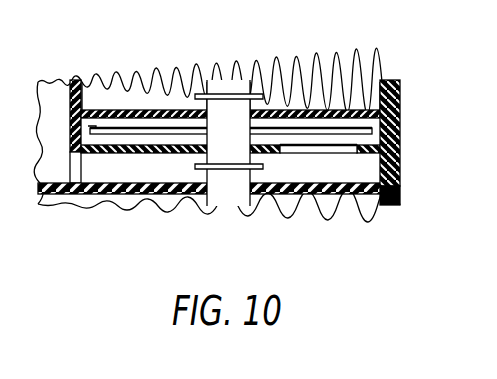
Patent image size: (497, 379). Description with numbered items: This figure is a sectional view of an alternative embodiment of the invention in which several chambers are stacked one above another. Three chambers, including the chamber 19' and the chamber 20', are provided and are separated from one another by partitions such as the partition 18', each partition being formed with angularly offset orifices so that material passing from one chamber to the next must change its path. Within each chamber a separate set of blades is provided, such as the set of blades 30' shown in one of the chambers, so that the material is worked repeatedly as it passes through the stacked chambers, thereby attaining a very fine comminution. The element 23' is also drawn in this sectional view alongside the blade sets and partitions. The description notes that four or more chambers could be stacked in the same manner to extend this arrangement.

The chamber 19' is at (231, 67).
The set of blades 30' is at (229, 153).
The lower conductor strip 23' is at (318, 209).
The chamber 20' is at (213, 212).
The partition 18' is at (382, 104).